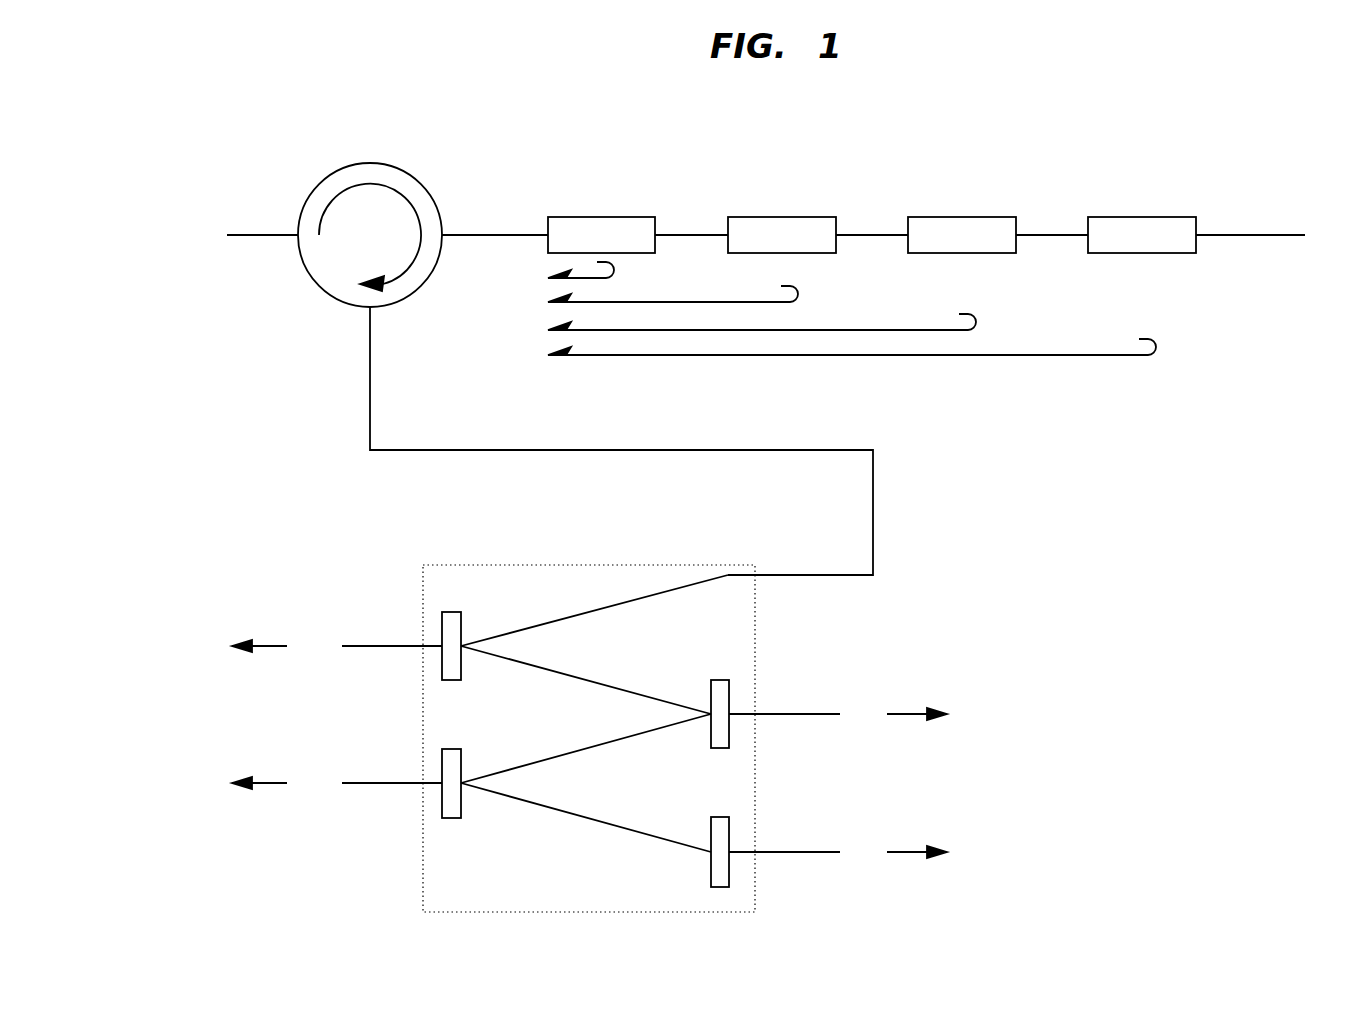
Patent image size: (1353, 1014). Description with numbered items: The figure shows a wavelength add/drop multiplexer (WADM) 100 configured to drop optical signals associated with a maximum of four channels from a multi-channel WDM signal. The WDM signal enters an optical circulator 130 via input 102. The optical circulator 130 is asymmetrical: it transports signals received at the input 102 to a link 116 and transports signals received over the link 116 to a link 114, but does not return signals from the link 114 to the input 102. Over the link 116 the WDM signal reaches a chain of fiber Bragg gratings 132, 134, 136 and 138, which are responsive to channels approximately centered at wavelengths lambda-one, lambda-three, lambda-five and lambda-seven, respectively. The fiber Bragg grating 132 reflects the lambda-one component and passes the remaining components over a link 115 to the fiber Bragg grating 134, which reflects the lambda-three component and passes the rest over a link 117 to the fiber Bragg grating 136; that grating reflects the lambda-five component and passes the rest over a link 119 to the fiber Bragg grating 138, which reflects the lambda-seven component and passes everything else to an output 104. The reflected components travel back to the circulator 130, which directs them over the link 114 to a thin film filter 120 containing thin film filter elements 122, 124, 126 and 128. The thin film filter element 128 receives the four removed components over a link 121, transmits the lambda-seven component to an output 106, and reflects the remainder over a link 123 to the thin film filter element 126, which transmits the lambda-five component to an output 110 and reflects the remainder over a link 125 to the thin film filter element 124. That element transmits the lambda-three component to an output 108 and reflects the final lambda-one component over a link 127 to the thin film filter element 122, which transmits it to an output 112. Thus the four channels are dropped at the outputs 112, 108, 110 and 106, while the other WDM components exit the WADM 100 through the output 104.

The wavelength add/drop multiplexer 100 is at (780, 118).
The input 102 is at (262, 236).
The output 104 is at (1258, 235).
The output 106 is at (412, 646).
The output 108 is at (412, 783).
The output 110 is at (832, 714).
The output 112 is at (830, 852).
The link 114 is at (650, 450).
The link 115 is at (692, 233).
The link 116 is at (520, 236).
The link 117 is at (872, 233).
The link 119 is at (1052, 233).
The thin film filter 120 is at (610, 565).
The link 121 is at (580, 613).
The thin film filter element 122 is at (729, 819).
The link 123 is at (595, 682).
The thin film filter element 124 is at (442, 815).
The link 125 is at (580, 750).
The thin film filter element 126 is at (729, 682).
The link 127 is at (595, 820).
The thin film filter element 128 is at (442, 677).
The optical circulator 130 is at (384, 164).
The fiber Bragg grating 132 is at (566, 217).
The fiber Bragg grating 134 is at (746, 217).
The fiber Bragg grating 136 is at (926, 217).
The fiber Bragg grating 138 is at (1106, 217).